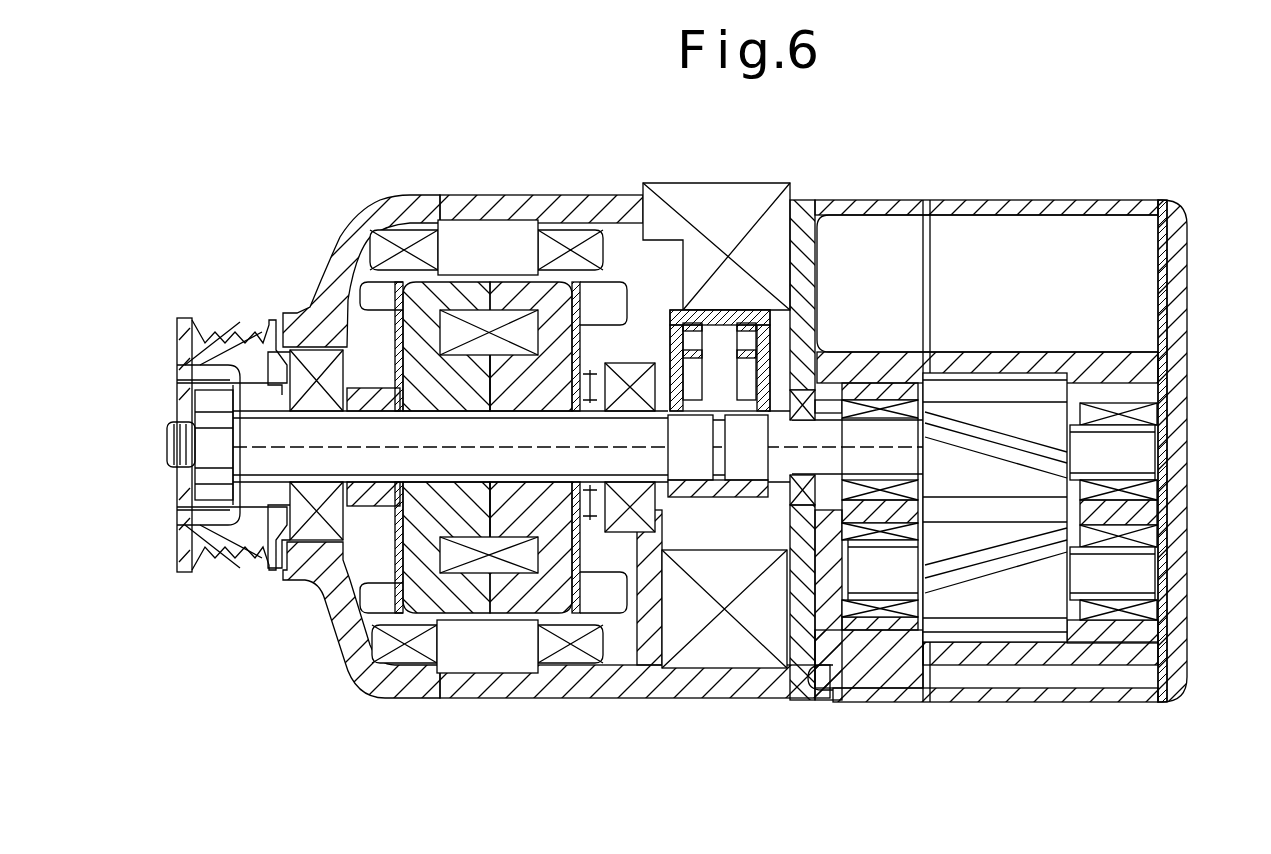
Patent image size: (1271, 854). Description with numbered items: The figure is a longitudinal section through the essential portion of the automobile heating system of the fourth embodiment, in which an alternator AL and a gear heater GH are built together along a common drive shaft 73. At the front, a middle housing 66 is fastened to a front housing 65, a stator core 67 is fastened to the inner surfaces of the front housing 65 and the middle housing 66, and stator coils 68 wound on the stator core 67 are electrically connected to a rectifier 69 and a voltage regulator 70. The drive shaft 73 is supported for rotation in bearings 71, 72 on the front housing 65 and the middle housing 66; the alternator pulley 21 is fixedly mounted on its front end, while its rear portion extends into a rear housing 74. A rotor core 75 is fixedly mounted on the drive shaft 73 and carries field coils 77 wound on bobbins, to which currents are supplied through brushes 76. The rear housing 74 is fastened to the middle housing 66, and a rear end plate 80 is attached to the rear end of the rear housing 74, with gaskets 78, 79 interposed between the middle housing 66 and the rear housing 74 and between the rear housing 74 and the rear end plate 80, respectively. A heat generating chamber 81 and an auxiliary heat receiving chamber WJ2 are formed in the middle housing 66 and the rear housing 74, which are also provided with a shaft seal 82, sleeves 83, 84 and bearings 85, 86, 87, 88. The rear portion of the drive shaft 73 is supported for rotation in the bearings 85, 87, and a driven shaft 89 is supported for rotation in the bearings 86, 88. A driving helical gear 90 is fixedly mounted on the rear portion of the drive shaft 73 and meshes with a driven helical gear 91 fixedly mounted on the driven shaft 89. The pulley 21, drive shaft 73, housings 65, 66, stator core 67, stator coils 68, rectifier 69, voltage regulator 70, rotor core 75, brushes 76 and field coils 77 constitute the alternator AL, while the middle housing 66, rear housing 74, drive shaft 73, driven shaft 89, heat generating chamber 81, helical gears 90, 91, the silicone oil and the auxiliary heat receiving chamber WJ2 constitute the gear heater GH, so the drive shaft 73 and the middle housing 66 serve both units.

The alternator pulley 21 is at (187, 345).
The front housing 65 is at (335, 258).
The middle housing 66 is at (579, 205).
The stator core 67 is at (483, 230).
The stator coils 68 is at (408, 235).
The rectifier 69 is at (720, 650).
The voltage regulator 70 is at (725, 222).
The bearing 71 is at (317, 540).
The bearing 72 is at (627, 513).
The drive shaft 73 is at (427, 455).
The rear housing 74 is at (1010, 203).
The rotor core 75 is at (463, 603).
The brushes 76 is at (750, 388).
The field coils 77 is at (495, 570).
The gasket 78 is at (927, 703).
The gasket 79 is at (1163, 703).
The rear end plate 80 is at (1180, 290).
The heat generating chamber 81 is at (966, 375).
The shaft seal 82 is at (800, 510).
The sleeve 83 is at (883, 387).
The sleeve 84 is at (892, 622).
The bearing 85 is at (848, 400).
The bearing 86 is at (848, 605).
The bearing 87 is at (1115, 403).
The bearing 88 is at (1113, 620).
The driven shaft 89 is at (899, 580).
The driving helical gear 90 is at (1057, 433).
The driven helical gear 91 is at (1054, 612).
The alternator AL is at (350, 159).
The gear heater GH is at (1132, 186).
The auxiliary heat receiving chamber WJ2 is at (1052, 283).